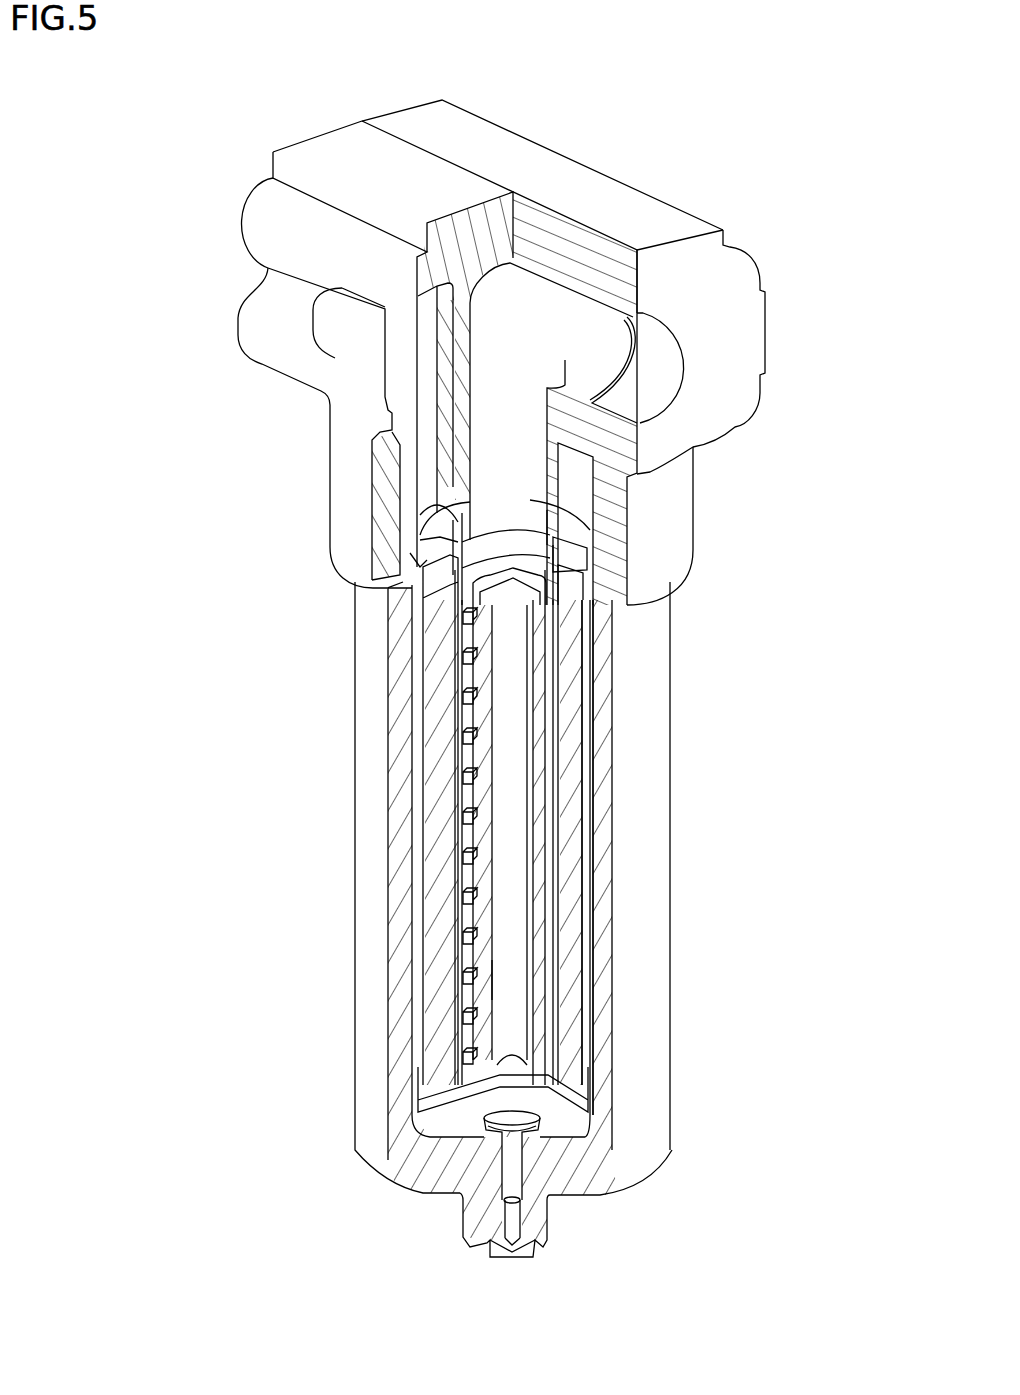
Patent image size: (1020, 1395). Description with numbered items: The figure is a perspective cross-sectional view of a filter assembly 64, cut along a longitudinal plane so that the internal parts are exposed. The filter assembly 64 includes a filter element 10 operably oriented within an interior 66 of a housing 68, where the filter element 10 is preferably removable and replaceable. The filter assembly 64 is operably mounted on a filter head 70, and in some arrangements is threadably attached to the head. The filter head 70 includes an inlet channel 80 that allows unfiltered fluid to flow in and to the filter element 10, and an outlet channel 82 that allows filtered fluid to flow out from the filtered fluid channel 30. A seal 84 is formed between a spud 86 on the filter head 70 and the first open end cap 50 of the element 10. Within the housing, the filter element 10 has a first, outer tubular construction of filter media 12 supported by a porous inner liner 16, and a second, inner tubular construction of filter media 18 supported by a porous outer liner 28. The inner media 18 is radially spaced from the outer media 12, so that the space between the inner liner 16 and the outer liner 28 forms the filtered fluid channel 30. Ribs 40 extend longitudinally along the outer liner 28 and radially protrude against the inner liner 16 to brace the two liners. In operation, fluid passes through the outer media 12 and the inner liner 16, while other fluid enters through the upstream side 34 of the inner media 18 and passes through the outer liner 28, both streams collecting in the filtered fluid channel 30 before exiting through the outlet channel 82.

The filter element 10 is at (587, 725).
The first outer tubular construction of filter media 12 is at (569, 1015).
The inner liner 16 is at (560, 645).
The second inner tubular construction of filter media 18 is at (503, 973).
The outer liner 28 is at (473, 862).
The filtered fluid channel 30 is at (465, 723).
The upstream side of the inner filter media 34 is at (526, 943).
The rib 40 is at (547, 672).
The first open end cap 50 is at (583, 547).
The filter assembly 64 is at (818, 255).
The interior 66 is at (588, 792).
The housing 68 is at (670, 912).
The filter head 70 is at (627, 193).
The inlet channel 80 is at (430, 425).
The outlet channel 82 is at (470, 425).
The seal 84 is at (464, 540).
The spud 86 is at (545, 468).